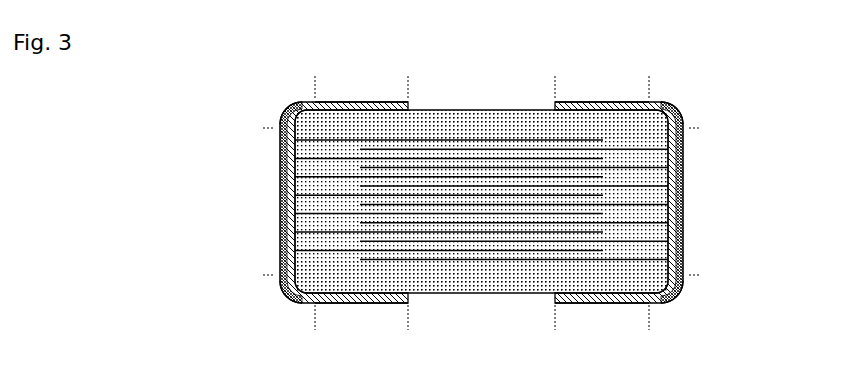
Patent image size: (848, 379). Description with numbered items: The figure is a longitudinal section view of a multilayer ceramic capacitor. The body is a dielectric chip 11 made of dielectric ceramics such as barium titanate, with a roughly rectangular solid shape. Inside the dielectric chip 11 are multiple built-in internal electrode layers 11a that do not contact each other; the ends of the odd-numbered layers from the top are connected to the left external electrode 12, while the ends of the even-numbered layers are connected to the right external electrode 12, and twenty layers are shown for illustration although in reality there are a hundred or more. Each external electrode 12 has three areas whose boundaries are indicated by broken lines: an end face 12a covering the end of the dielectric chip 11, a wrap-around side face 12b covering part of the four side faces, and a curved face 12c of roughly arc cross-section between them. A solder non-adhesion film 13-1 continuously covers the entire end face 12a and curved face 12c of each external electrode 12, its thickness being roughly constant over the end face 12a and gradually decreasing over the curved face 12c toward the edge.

The dielectric chip 11 is at (462, 108).
The internal electrode layer 11a is at (528, 138).
The external electrode 12 is at (280, 175).
The end face 12a is at (284, 203).
The side face 12b is at (355, 100).
The curved face 12c is at (289, 105).
The solder non-adhesion film 13-1 is at (292, 232).